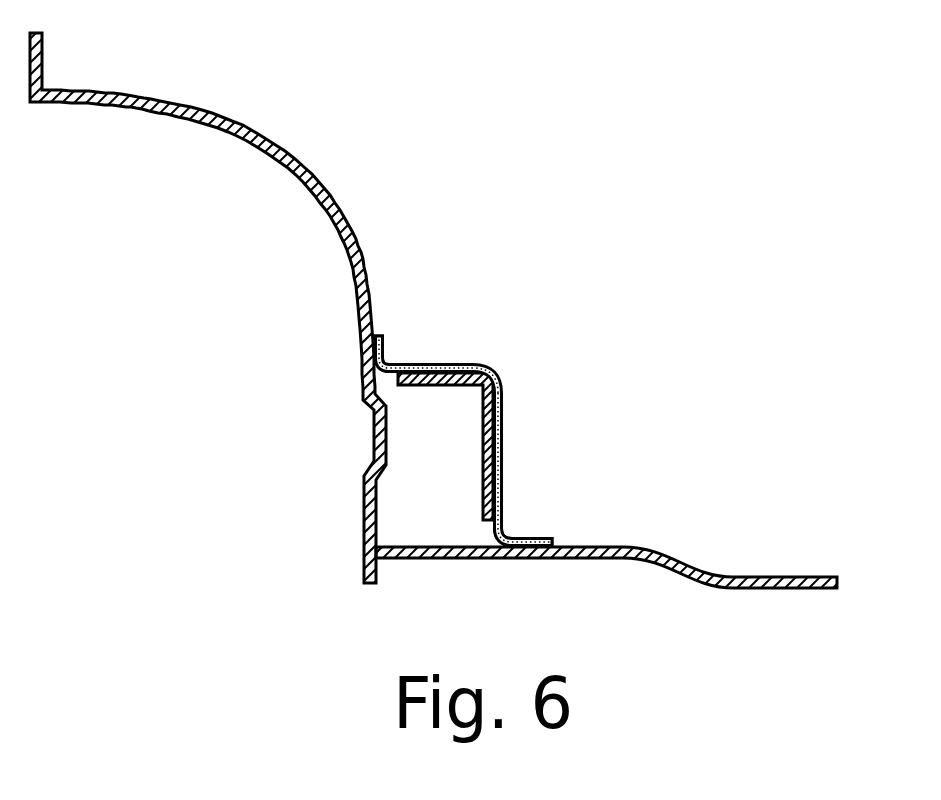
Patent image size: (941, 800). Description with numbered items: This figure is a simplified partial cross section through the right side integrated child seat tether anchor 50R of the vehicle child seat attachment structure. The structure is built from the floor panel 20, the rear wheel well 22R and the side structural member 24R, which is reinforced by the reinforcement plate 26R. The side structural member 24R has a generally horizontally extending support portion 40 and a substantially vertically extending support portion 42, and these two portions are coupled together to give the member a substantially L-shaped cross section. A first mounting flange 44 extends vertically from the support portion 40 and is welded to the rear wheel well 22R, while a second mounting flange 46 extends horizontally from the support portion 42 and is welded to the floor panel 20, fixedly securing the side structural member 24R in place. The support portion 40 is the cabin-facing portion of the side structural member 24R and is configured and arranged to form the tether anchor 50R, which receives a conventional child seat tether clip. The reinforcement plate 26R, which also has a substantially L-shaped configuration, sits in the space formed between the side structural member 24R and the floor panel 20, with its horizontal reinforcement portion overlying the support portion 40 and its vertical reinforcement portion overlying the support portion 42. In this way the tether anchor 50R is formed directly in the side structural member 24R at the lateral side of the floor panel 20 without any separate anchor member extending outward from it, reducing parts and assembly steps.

The rear wheel well 22R is at (233, 118).
The floor panel 20 is at (762, 577).
The reinforcement plate 26R is at (470, 433).
The horizontally extending support portion 40 is at (442, 363).
The first mounting flange 44 is at (385, 340).
The vertically extending support portion 42 is at (503, 447).
The second mounting flange 46 is at (535, 537).
The right side integrated child seat tether anchor 50R is at (510, 352).
The side structural member 24R is at (515, 375).